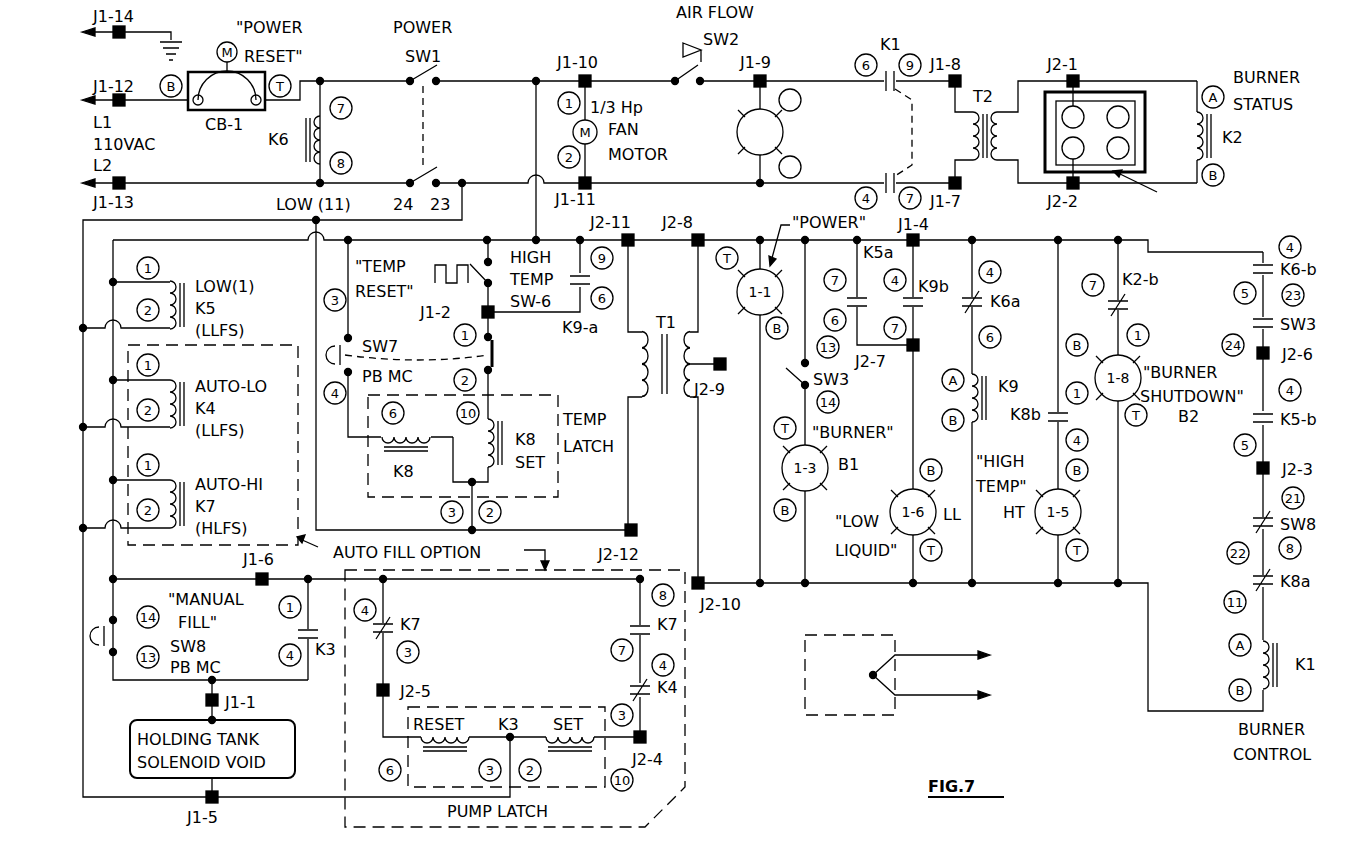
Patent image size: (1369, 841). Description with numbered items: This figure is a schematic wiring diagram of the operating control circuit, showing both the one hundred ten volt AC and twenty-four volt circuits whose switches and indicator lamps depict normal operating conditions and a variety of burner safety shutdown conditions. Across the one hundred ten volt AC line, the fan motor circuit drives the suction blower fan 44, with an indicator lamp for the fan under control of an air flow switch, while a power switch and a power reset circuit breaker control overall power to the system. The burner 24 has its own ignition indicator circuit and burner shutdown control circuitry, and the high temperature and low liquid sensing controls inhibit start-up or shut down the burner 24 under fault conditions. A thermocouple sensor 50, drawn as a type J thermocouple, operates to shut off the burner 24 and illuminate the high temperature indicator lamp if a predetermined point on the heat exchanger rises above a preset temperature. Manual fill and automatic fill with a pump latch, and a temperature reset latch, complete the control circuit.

The burner 24 is at (1303, 166).
The suction blower fan 44 is at (743, 132).
The thermocouple sensor 50 is at (838, 720).